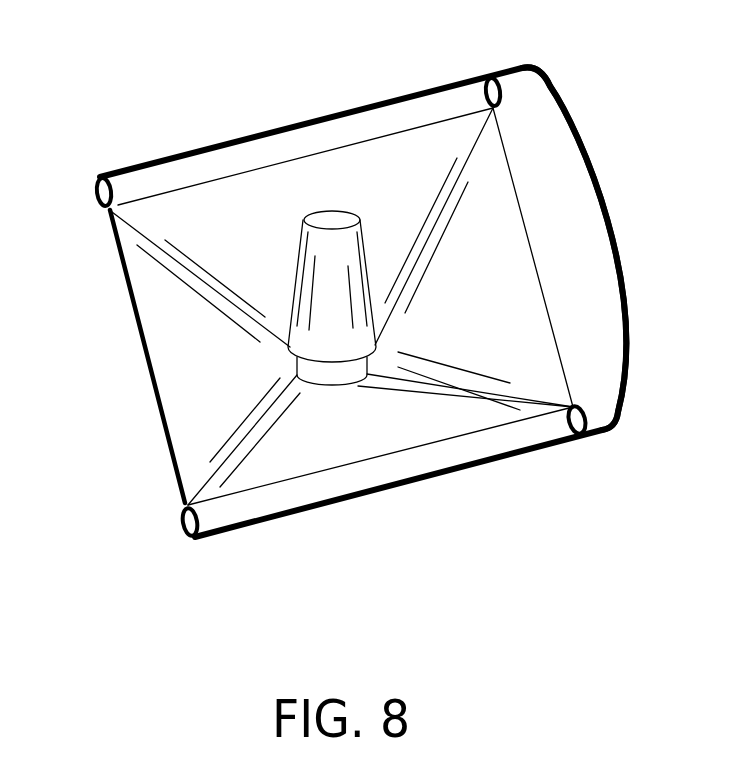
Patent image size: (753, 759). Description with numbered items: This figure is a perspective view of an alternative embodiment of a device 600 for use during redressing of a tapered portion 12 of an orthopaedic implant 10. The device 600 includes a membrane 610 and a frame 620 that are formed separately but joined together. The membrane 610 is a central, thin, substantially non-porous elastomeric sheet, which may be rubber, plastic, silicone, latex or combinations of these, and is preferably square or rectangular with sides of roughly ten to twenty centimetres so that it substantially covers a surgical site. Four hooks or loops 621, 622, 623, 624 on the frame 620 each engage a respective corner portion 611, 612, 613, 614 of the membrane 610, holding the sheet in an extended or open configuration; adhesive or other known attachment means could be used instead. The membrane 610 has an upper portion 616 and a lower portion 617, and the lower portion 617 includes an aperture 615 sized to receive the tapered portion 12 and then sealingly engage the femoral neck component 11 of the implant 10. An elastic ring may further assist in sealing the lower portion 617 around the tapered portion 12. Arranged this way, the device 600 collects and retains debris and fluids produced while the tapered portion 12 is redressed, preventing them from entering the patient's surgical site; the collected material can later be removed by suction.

The device 600 is at (604, 66).
The orthopaedic implant 10 is at (108, 343).
The femoral neck component 11 is at (362, 376).
The tapered portion 12 is at (322, 243).
The membrane 610 is at (540, 272).
The corner portion 611 is at (118, 204).
The corner portion 612 is at (482, 128).
The corner portion 613 is at (552, 408).
The corner portion 614 is at (188, 500).
The aperture 615 is at (332, 388).
The upper portion 616 is at (490, 187).
The lower portion 617 is at (399, 353).
The frame 620 is at (623, 348).
The hook or loop 621 is at (95, 184).
The hook or loop 622 is at (492, 77).
The hook or loop 623 is at (583, 436).
The hook or loop 624 is at (190, 540).